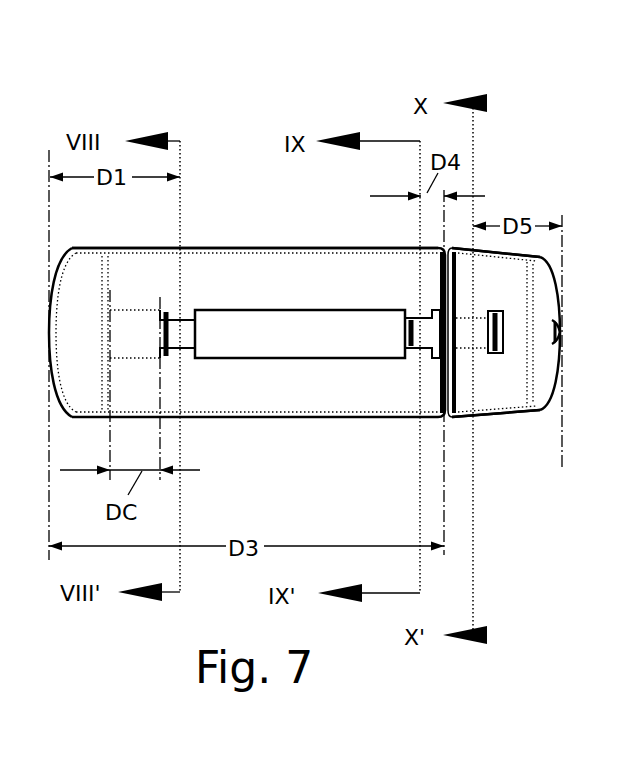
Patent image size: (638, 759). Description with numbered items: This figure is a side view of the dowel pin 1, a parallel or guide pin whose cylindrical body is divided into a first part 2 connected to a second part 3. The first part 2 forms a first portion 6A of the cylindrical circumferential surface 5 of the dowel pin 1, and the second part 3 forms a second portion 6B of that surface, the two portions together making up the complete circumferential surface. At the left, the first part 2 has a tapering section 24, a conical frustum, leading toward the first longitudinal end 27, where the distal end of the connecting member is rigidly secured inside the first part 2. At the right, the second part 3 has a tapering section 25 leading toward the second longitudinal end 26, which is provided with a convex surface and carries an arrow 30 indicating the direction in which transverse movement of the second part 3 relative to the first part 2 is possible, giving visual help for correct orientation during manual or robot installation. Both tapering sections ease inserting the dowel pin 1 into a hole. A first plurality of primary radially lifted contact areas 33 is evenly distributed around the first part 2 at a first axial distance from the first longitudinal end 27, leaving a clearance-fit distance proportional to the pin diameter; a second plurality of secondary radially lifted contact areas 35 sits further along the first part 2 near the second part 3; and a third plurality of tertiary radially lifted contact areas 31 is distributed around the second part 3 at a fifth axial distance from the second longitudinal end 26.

The dowel pin 1 is at (245, 78).
The first part 2 is at (290, 457).
The second part 3 is at (540, 203).
The circumferential surface 5 is at (326, 218).
The first portion of the circumferential surface 6A is at (286, 247).
The second portion of the circumferential surface 6B is at (462, 240).
The tapering section 24 is at (90, 250).
The tapering section 25 is at (520, 415).
The second longitudinal end 26 is at (556, 295).
The first longitudinal end 27 is at (52, 362).
The arrow 30 is at (553, 334).
The tertiary radially lifted contact areas 31 is at (478, 338).
The primary radially lifted contact areas 33 is at (172, 316).
The secondary radially lifted contact areas 35 is at (417, 336).